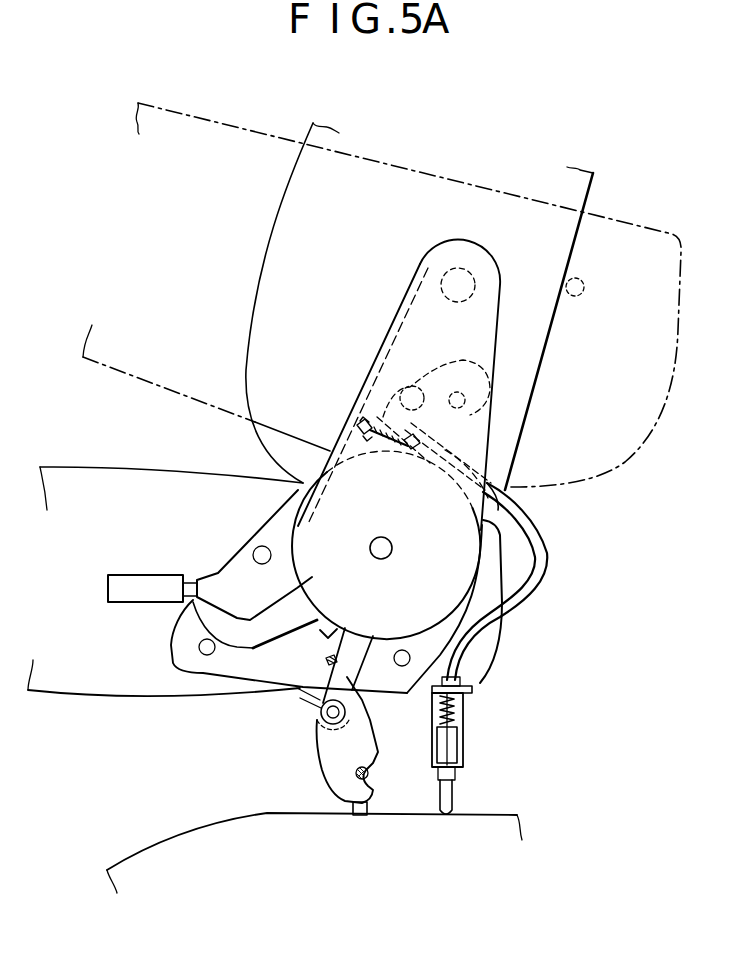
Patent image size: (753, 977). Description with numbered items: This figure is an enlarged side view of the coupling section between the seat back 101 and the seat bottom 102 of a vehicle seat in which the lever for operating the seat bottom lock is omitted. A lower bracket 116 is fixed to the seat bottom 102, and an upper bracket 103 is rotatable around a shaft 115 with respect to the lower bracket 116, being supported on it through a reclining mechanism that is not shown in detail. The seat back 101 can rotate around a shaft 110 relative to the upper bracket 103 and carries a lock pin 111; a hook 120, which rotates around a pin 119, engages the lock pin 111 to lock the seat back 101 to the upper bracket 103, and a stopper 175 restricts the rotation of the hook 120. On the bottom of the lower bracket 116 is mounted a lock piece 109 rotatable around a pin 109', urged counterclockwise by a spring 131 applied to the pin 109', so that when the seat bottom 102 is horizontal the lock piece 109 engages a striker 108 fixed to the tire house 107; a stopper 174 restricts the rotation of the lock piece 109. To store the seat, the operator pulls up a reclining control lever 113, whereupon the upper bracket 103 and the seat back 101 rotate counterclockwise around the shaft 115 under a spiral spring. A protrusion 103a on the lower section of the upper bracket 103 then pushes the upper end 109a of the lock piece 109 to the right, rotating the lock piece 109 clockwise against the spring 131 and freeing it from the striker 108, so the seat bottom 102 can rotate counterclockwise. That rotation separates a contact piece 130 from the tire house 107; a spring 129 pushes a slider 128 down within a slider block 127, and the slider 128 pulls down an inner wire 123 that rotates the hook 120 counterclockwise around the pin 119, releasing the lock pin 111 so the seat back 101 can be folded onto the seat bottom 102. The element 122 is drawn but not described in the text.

The seat back 101 is at (647, 225).
The seat bottom 102 is at (143, 700).
The upper bracket 103 is at (491, 453).
The protrusion 103a is at (326, 634).
The tire house 107 is at (168, 843).
The striker 108 is at (350, 808).
The lock piece 109 is at (322, 740).
The pin 109' is at (300, 741).
The upper end of the lock piece 109a is at (371, 638).
The shaft 110 is at (470, 284).
The lock pin 111 is at (467, 402).
The reclining control lever 113 is at (162, 575).
The shaft 115 is at (388, 536).
The lower bracket 116 is at (239, 550).
The pin 119 is at (400, 393).
The hook 120 is at (438, 364).
The cable bracket 122 is at (548, 550).
The inner wire 123 is at (345, 422).
The slider block 127 is at (464, 752).
The slider 128 is at (434, 736).
The spring 129 is at (456, 714).
The contact piece 130 is at (455, 800).
The spring 131 is at (317, 710).
The stopper 174 is at (352, 610).
The stopper 175 is at (430, 437).